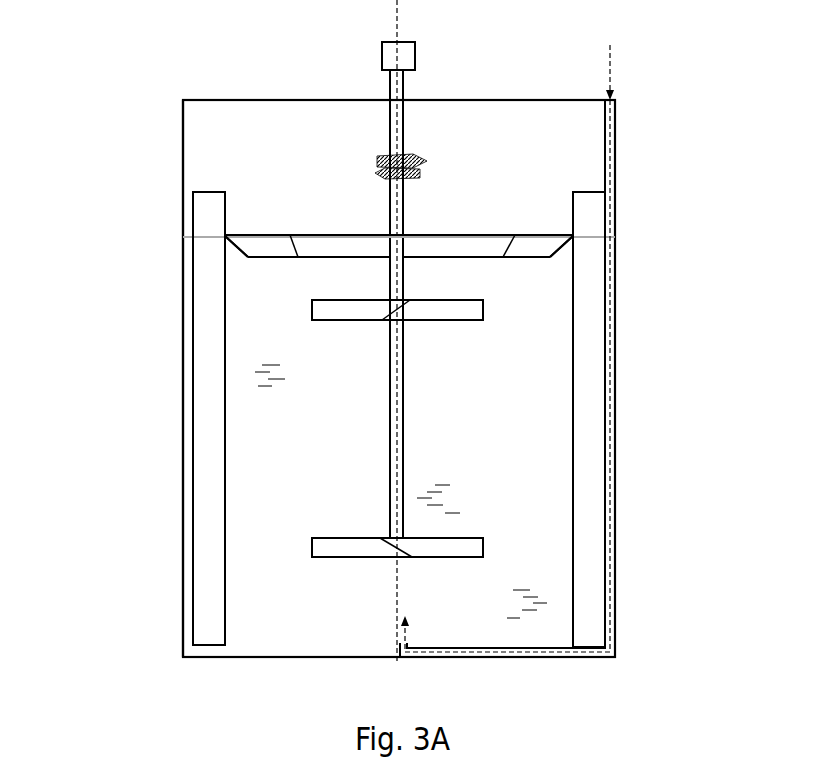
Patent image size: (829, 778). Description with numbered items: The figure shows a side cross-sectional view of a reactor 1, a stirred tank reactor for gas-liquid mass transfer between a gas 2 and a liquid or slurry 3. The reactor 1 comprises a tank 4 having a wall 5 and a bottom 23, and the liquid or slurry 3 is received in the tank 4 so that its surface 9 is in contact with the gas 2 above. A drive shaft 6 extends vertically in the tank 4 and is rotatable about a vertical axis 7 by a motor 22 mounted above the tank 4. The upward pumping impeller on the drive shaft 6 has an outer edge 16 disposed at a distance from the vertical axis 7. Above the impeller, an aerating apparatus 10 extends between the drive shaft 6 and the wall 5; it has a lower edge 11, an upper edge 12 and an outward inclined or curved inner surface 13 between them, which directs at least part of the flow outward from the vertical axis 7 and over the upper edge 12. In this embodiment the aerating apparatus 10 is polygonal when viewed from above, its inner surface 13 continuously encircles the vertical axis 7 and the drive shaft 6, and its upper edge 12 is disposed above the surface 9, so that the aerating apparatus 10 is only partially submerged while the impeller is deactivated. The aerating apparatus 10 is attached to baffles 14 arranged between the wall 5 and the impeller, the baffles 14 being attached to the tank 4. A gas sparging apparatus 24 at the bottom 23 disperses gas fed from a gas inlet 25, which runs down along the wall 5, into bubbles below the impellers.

The reactor 1 is at (124, 51).
The gas 2 is at (480, 190).
The liquid or slurry 3 is at (534, 499).
The tank 4 is at (182, 127).
The wall 5 is at (181, 370).
The drive shaft 6 is at (390, 125).
The vertical axis 7 is at (400, 20).
The surface 9 is at (498, 235).
The aerating apparatus 10 is at (532, 248).
The lower edge 11 is at (247, 257).
The upper edge 12 is at (225, 236).
The inner surface 13 is at (238, 243).
The baffles 14 is at (200, 478).
The outer edge 16 is at (312, 312).
The motor 22 is at (382, 48).
The bottom 23 is at (262, 658).
The gas sparging apparatus 24 is at (472, 656).
The gas inlet 25 is at (613, 96).